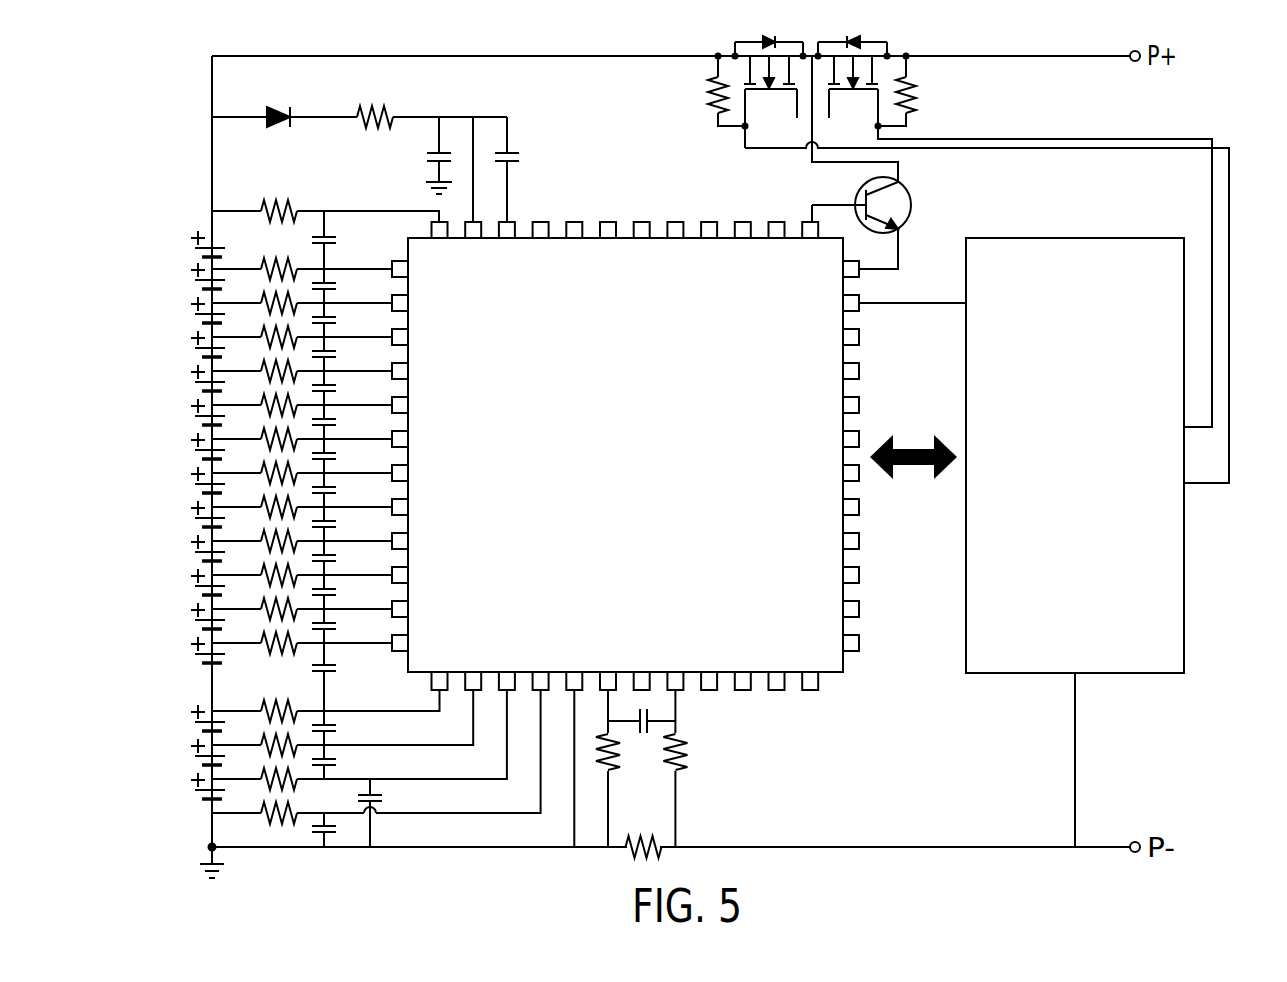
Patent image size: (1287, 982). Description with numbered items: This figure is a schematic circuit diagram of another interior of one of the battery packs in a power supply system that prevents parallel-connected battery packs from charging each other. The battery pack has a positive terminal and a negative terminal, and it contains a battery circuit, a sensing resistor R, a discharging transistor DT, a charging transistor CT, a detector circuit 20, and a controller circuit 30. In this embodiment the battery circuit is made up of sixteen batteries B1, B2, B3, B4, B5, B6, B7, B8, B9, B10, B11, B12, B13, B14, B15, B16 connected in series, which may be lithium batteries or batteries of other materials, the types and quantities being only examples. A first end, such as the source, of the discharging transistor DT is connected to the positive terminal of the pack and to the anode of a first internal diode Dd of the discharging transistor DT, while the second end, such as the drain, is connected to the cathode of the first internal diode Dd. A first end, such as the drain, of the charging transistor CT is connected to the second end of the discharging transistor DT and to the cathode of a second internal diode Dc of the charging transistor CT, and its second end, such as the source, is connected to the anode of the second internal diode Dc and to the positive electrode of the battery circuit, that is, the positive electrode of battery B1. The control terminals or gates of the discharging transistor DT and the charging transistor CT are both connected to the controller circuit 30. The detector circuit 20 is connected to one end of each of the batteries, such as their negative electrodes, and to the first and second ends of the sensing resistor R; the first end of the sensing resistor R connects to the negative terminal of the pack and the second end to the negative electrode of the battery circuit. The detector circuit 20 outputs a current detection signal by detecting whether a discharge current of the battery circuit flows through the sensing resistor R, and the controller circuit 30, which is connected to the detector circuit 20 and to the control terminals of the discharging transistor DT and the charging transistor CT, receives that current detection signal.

The detector circuit 20 is at (792, 660).
The controller circuit 30 is at (1113, 662).
The sensing resistor R is at (644, 830).
The second internal diode Dc is at (769, 28).
The first internal diode Dd is at (852, 28).
The charging transistor CT is at (770, 102).
The discharging transistor DT is at (853, 91).
The battery B1 is at (192, 248).
The battery B2 is at (192, 281).
The battery B3 is at (192, 315).
The battery B4 is at (192, 349).
The battery B5 is at (192, 383).
The battery B6 is at (192, 417).
The battery B7 is at (192, 451).
The battery B8 is at (192, 485).
The battery B9 is at (192, 519).
The battery B10 is at (183, 553).
The battery B11 is at (183, 587).
The battery B12 is at (183, 621).
The battery B13 is at (183, 655).
The battery B14 is at (183, 723).
The battery B15 is at (183, 757).
The battery B16 is at (183, 791).